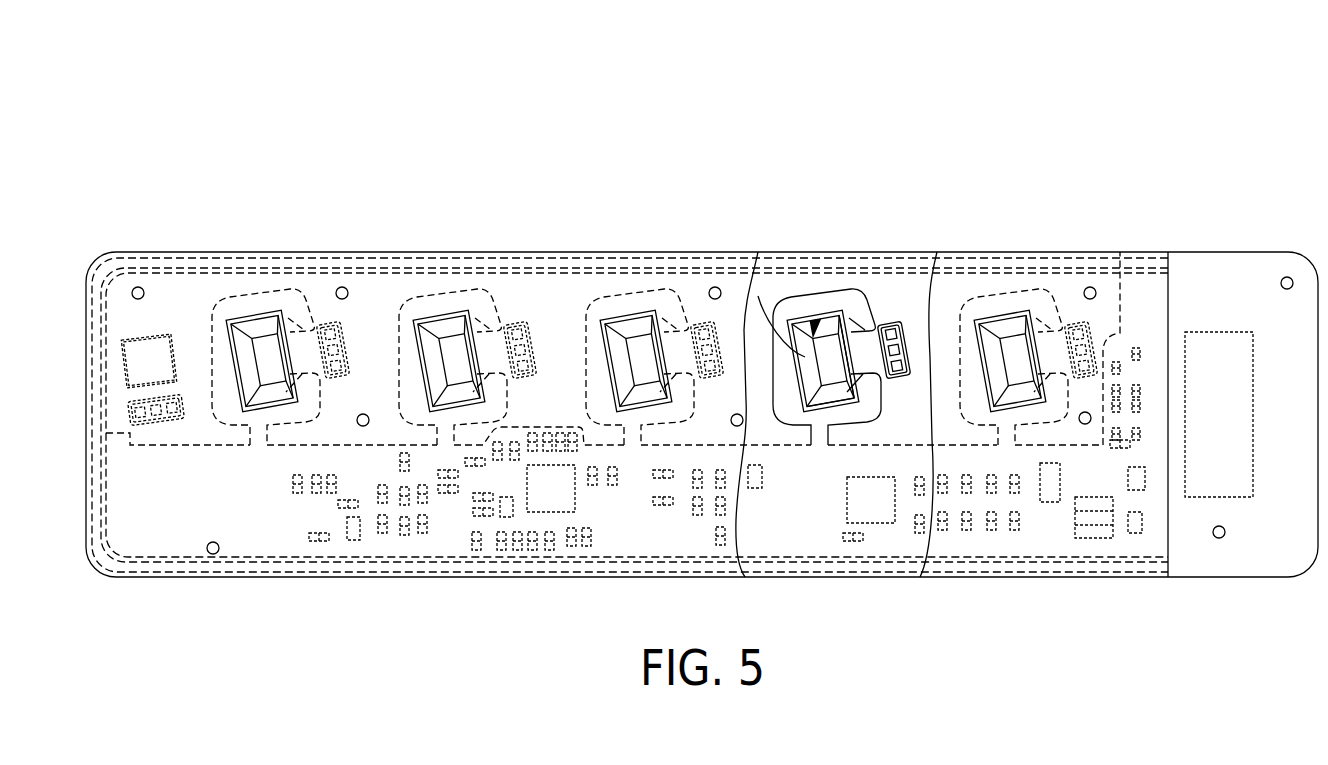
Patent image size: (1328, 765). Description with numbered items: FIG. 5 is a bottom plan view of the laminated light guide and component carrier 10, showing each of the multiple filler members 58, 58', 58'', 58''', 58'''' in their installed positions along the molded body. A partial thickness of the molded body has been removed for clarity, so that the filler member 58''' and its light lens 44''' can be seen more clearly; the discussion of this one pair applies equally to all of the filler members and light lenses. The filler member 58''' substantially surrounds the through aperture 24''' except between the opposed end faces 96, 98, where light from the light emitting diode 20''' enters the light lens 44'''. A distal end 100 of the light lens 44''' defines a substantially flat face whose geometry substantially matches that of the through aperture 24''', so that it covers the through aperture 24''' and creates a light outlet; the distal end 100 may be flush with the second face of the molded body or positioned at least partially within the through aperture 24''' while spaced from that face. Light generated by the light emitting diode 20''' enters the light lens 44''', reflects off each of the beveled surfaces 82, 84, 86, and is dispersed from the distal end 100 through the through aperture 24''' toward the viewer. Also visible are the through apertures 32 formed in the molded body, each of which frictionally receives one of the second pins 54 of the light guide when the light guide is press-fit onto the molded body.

The lighting assembly 10 is at (903, 147).
The light emitting diode 20''' is at (969, 295).
The through aperture 24''' is at (807, 299).
The through apertures 32 is at (207, 547).
The light lens 44''' is at (887, 304).
The second pins 54 is at (213, 554).
The filler member 58 is at (283, 451).
The filler member 58' is at (472, 451).
The filler member 58'' is at (662, 451).
The filler member 58''' is at (856, 451).
The filler member 58'''' is at (1043, 451).
The beveled surface 82 is at (759, 255).
The beveled surface 84 is at (838, 398).
The beveled surface 86 is at (827, 335).
The end face 96 is at (833, 357).
The end face 98 is at (865, 388).
The distal end 100 is at (830, 318).